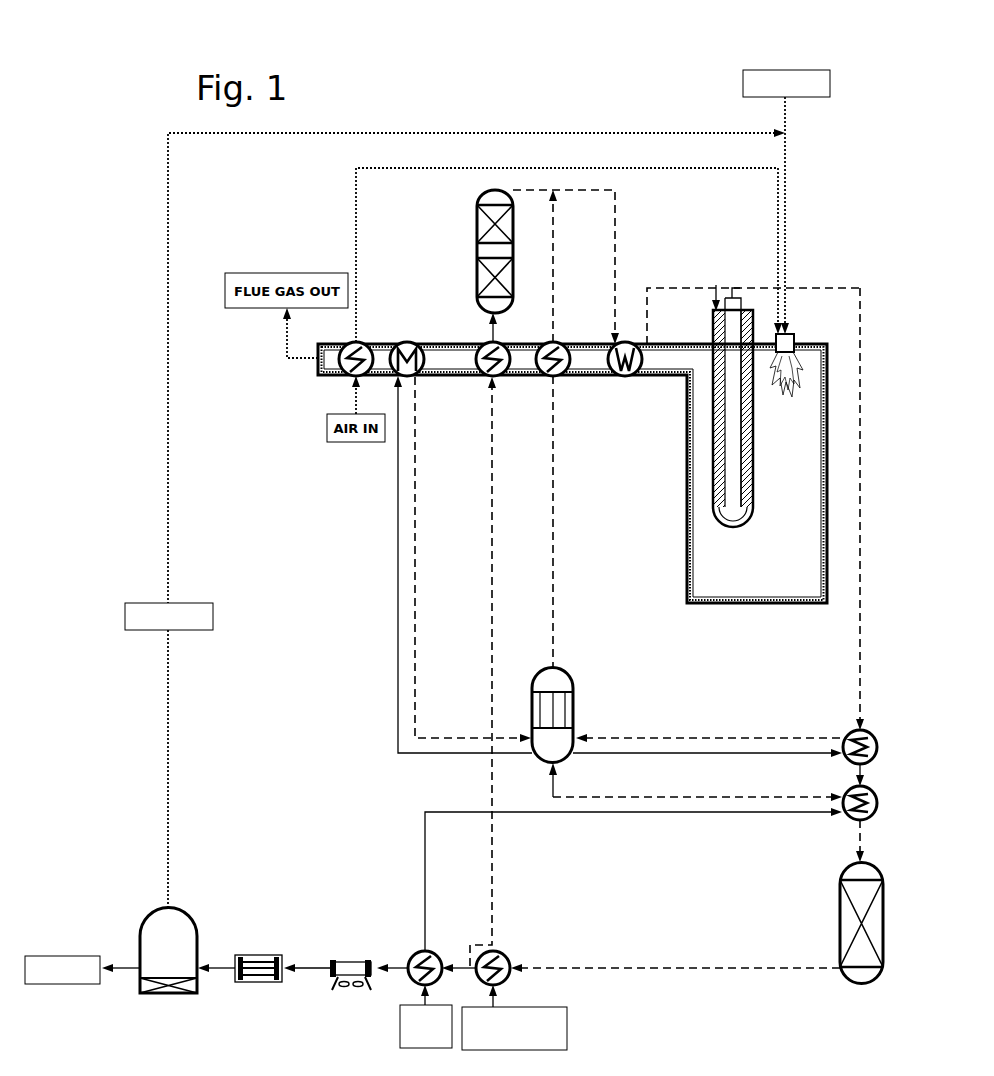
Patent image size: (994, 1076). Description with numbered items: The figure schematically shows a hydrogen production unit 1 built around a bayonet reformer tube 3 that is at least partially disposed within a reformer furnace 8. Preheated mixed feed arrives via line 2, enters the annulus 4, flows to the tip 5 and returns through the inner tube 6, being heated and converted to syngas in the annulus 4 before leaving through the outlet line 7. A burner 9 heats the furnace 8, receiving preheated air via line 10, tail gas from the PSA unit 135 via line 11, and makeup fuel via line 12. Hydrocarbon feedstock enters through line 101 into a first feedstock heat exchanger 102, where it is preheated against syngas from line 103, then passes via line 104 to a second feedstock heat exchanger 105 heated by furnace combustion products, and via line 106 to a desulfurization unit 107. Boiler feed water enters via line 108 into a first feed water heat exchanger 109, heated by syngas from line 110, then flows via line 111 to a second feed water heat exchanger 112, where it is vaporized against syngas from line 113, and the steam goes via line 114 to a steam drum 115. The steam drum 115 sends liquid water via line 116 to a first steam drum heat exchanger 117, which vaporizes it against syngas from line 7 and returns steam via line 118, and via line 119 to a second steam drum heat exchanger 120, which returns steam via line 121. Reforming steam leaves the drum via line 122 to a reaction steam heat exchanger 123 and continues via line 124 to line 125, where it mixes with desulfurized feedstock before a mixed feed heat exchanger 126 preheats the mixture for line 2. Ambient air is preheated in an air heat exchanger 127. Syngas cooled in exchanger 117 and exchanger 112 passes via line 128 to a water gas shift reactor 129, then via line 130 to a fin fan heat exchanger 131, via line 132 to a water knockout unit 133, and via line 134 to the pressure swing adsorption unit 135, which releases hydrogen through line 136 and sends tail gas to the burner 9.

The hydrogen production unit 1 is at (438, 84).
The line 2 is at (673, 286).
The bayonet reformer tube 3 is at (716, 393).
The annulus 4 is at (722, 422).
The tip 5 is at (732, 522).
The inner tube 6 is at (732, 482).
The outlet line 7 is at (862, 307).
The reformer furnace 8 is at (710, 577).
The burner 9 is at (794, 340).
The line 10 is at (355, 193).
The line 11 is at (168, 725).
The line 12 is at (786, 125).
The line 101 is at (500, 993).
The first feedstock heat exchanger 102 is at (505, 954).
The line 103 is at (572, 968).
The line 104 is at (493, 896).
The second feedstock heat exchanger 105 is at (487, 381).
The line 106 is at (490, 324).
The desulfurization unit 107 is at (477, 210).
The line 108 is at (422, 991).
The first feed water heat exchanger 109 is at (420, 950).
The line 110 is at (469, 957).
The line 111 is at (600, 812).
The second feed water heat exchanger 112 is at (877, 800).
The line 113 is at (865, 765).
The line 114 is at (702, 797).
The steam drum 115 is at (575, 680).
The line 116 is at (615, 753).
The first steam drum heat exchanger 117 is at (877, 741).
The line 118 is at (602, 740).
The line 119 is at (413, 726).
The second steam drum heat exchanger 120 is at (408, 342).
The line 121 is at (412, 752).
The line 122 is at (556, 480).
The reaction steam heat exchanger 123 is at (559, 377).
The line 124 is at (556, 227).
The line 125 is at (617, 202).
The mixed feed heat exchanger 126 is at (622, 377).
The air heat exchanger 127 is at (362, 344).
The line 128 is at (865, 828).
The water gas shift reactor 129 is at (884, 900).
The line 130 is at (394, 966).
The fin fan heat exchanger 131 is at (351, 988).
The line 132 is at (294, 973).
The water knockout unit 133 is at (247, 983).
The line 134 is at (210, 970).
The pressure swing adsorption unit 135 is at (144, 922).
The line 136 is at (130, 972).